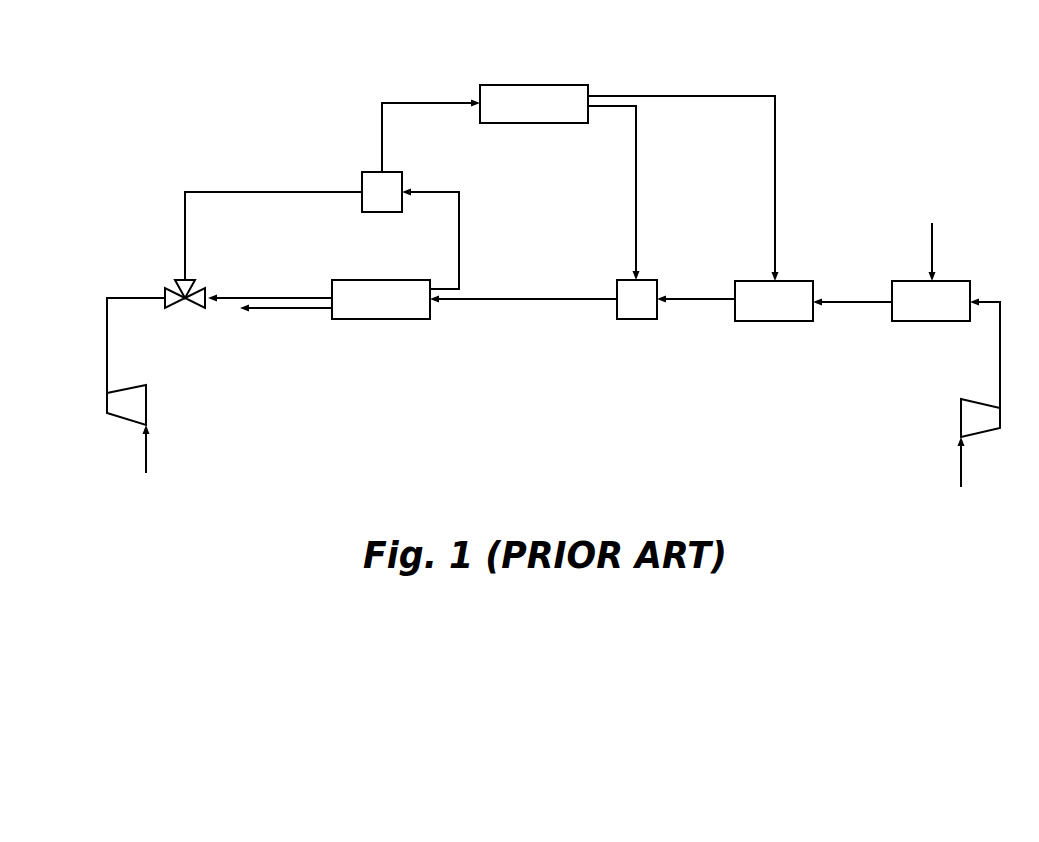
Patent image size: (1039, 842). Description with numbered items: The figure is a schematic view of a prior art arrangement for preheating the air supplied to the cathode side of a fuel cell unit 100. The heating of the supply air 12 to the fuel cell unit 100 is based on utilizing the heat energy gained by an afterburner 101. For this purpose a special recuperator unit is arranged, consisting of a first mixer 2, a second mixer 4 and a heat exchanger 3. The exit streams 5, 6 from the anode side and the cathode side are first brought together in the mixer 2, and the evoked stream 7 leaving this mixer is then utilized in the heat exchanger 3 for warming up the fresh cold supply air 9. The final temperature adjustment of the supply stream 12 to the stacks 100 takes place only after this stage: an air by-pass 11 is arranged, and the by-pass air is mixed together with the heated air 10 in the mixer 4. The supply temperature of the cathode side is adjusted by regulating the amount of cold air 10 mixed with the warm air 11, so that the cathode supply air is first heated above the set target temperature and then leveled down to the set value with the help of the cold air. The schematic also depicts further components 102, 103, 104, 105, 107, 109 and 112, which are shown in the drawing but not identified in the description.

The mixer 2 is at (632, 320).
The heat exchanger 3 is at (380, 320).
The mixer 4 is at (392, 172).
The exit stream 5 is at (697, 298).
The exit stream 6 is at (637, 192).
The evoked stream 7 is at (852, 300).
The fresh cold supply air 9 is at (297, 298).
The heated air 10 is at (460, 221).
The air by-pass 11 is at (318, 191).
The supply air 12 is at (405, 103).
The fuel cell unit 100 is at (520, 85).
The afterburner 101 is at (775, 322).
The combustion chamber 102 is at (910, 322).
The first compressor 103 is at (146, 400).
The second compressor 104 is at (961, 408).
The valve 105 is at (192, 306).
The fuel inlet 107 is at (932, 250).
The air line 109 is at (100, 296).
The bypass stream 112 is at (776, 192).